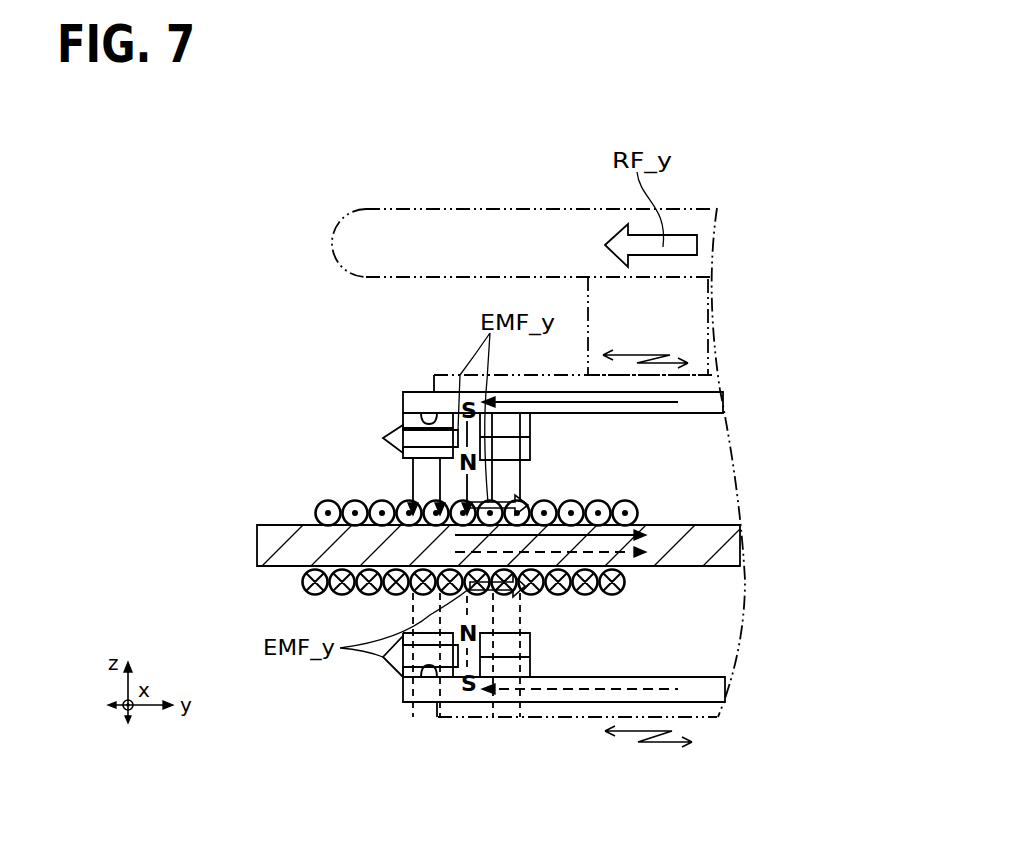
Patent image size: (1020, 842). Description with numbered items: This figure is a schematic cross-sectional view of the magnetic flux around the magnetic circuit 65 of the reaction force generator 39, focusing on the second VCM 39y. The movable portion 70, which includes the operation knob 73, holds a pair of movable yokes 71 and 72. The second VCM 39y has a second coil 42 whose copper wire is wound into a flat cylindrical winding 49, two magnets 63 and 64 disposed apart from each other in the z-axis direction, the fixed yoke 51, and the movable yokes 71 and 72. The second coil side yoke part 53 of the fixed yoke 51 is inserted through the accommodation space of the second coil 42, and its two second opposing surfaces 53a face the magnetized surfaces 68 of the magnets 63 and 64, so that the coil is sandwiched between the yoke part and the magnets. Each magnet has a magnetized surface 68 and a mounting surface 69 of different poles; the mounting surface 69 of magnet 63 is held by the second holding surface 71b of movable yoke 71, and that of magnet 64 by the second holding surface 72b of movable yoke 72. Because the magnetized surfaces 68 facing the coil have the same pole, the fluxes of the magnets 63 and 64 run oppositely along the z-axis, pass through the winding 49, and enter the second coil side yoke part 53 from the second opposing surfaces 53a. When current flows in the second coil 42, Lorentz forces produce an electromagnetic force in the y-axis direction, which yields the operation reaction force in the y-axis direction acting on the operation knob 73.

The reaction force generator 39 is at (718, 354).
The second VCM 39y is at (292, 447).
The second coil 42 is at (420, 543).
The winding 49 is at (420, 543).
The fixed yoke 51 is at (737, 553).
The second coil side yoke part 53 is at (258, 555).
The second opposing surface 53a is at (365, 538).
The magnet 63 is at (532, 437).
The magnet 64 is at (532, 657).
The magnetic circuit 65 is at (689, 508).
The magnetized surface 68 is at (515, 462).
The mounting surface 69 is at (405, 402).
The movable portion 70 is at (462, 208).
The movable yoke 71 is at (423, 412).
The second holding surface 71b is at (430, 420).
The movable yoke 72 is at (415, 702).
The second holding surface 72b is at (430, 678).
The operation knob 73 is at (522, 212).